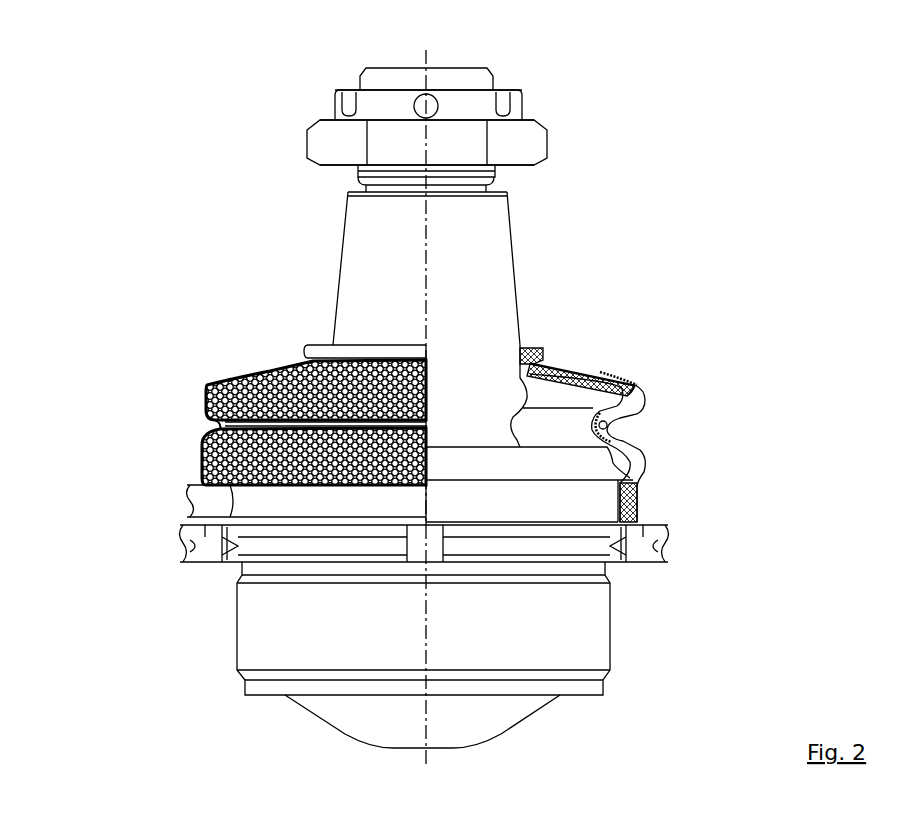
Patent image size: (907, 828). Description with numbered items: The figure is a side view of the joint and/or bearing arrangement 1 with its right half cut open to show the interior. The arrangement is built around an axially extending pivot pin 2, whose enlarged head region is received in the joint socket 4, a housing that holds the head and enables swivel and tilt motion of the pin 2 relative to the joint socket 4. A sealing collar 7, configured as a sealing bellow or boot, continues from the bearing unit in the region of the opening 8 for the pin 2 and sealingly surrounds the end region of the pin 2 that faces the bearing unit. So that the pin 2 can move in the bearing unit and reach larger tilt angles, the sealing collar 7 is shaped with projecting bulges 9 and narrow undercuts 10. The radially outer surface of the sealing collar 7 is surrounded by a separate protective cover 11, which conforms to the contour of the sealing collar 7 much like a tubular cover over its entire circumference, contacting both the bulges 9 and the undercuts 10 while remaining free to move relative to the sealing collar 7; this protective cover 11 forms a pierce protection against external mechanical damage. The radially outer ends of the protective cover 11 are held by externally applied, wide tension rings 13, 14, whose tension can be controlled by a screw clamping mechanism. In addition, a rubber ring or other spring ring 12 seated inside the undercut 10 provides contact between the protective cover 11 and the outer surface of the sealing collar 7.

The joint and/or bearing arrangement 1 is at (648, 143).
The pivot pin 2 is at (472, 282).
The joint socket 4 is at (588, 622).
The sealing collar 7 is at (643, 462).
The opening 8 is at (553, 438).
The projecting bulges 9 is at (202, 402).
The narrow undercuts 10 is at (220, 425).
The protective cover 11 is at (625, 380).
The spring ring 12 is at (608, 425).
The tension ring 13 is at (640, 505).
The tension ring 14 is at (550, 357).